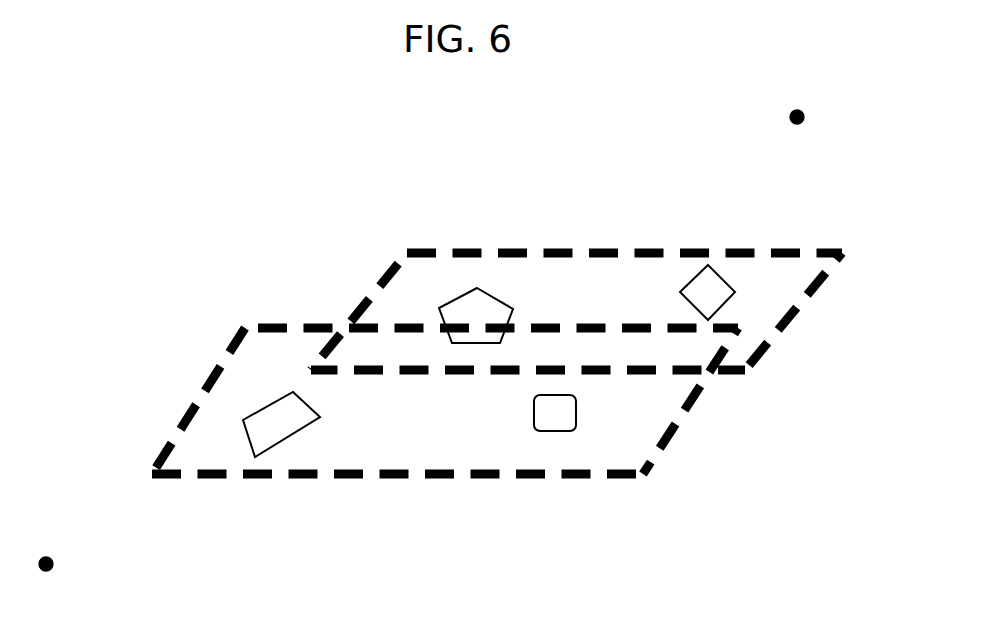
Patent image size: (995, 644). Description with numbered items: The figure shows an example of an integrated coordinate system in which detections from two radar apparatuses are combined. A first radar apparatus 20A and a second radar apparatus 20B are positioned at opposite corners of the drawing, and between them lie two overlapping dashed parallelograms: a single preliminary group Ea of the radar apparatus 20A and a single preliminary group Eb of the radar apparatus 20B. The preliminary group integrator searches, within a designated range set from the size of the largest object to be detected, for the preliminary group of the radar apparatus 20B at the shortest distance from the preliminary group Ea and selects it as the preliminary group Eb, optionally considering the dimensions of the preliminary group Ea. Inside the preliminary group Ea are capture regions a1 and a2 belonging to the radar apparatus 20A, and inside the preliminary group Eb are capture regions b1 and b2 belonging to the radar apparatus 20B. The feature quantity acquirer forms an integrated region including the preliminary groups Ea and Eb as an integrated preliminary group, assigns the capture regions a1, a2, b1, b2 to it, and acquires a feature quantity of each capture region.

The preliminary group Ea is at (393, 477).
The preliminary group Eb is at (603, 248).
The capture region a1 is at (268, 405).
The capture region a2 is at (577, 413).
The capture region b1 is at (735, 291).
The capture region b2 is at (455, 297).
The radar apparatus 20A is at (46, 571).
The radar apparatus 20B is at (805, 116).